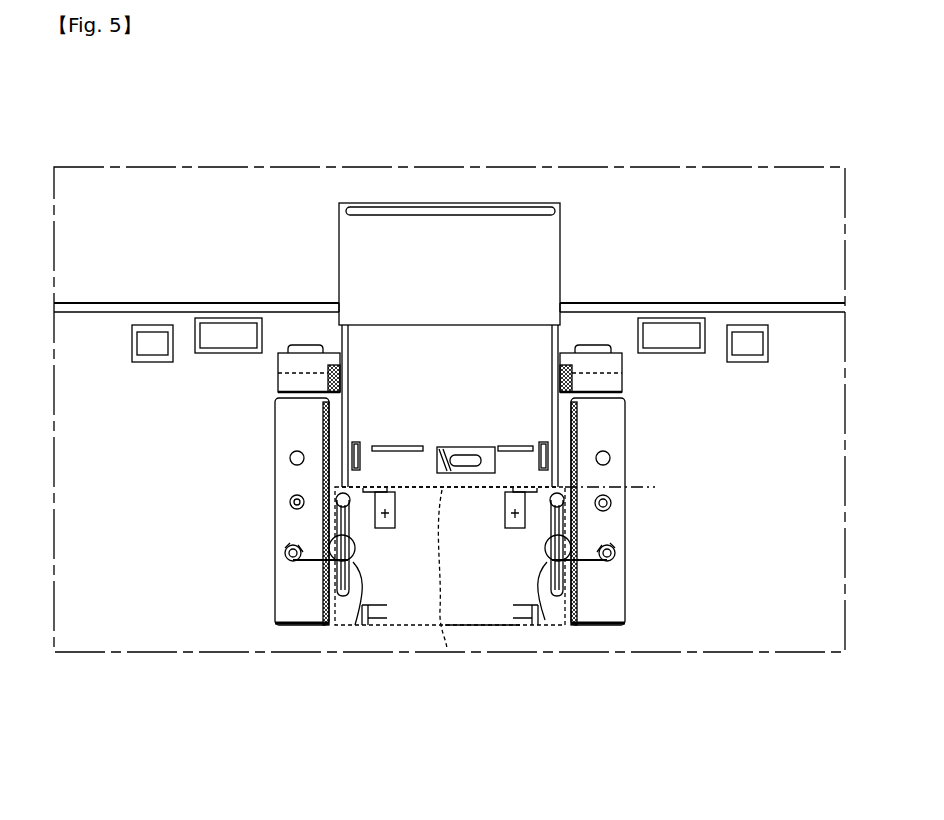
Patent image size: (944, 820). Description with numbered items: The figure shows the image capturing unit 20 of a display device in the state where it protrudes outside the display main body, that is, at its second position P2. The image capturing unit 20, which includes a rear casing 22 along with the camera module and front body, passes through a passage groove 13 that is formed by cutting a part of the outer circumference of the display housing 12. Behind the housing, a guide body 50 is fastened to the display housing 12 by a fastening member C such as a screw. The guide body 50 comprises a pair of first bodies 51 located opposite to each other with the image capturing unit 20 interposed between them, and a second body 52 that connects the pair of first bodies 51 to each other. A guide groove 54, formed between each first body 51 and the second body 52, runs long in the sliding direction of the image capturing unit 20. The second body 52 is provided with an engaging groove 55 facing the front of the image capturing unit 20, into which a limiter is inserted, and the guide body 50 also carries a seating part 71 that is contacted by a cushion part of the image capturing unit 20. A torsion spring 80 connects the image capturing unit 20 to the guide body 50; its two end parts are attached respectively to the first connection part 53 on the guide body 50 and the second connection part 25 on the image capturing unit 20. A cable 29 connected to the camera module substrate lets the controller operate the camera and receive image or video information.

The display housing 12 is at (718, 293).
The passage groove 13 is at (338, 302).
The image capturing unit 20 is at (516, 190).
The rear casing 22 is at (362, 405).
The second connection part 25 is at (297, 506).
The cable 29 is at (447, 650).
The guide body 50 is at (600, 331).
The first body 51 is at (282, 482).
The second body 52 is at (483, 617).
The first connection part 53 is at (285, 555).
The guide groove 54 is at (340, 592).
The engaging groove 55 is at (385, 515).
The seating part 71 is at (523, 622).
The torsion spring 80 is at (355, 625).
The second position P2 is at (625, 489).
The fastening member C is at (610, 508).